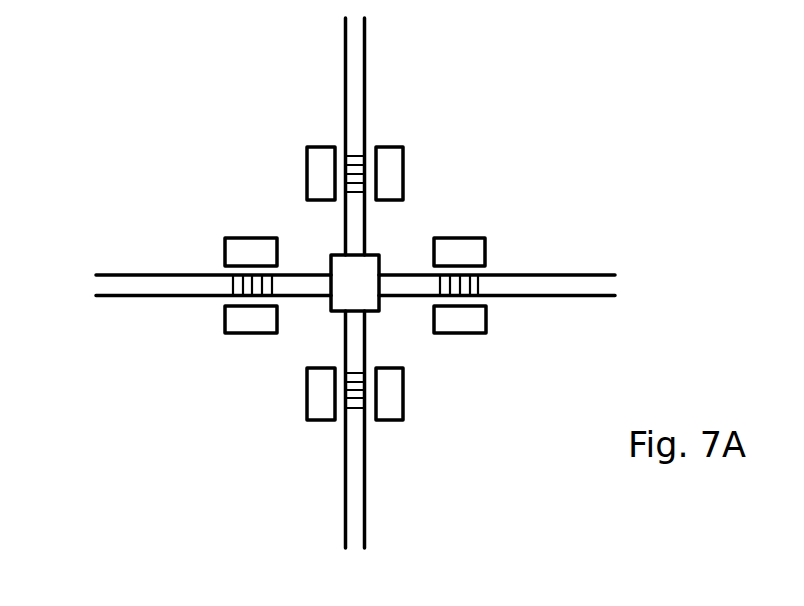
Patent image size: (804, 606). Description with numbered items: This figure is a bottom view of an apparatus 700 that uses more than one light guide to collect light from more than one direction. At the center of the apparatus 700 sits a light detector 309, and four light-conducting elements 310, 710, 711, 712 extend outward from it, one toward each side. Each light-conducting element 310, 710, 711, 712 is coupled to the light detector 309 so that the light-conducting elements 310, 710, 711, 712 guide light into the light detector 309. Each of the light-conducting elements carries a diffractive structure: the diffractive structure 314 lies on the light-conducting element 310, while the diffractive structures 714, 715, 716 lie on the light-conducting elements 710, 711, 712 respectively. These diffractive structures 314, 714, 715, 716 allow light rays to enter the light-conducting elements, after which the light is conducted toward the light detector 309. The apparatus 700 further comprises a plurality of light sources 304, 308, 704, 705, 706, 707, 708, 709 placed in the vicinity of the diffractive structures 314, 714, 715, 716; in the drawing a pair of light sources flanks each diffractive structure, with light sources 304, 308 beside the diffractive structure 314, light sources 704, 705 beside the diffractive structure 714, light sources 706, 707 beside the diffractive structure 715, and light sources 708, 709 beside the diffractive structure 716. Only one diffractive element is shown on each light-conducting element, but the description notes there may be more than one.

The apparatus 700 is at (621, 142).
The light source 304 is at (240, 237).
The light source 308 is at (242, 335).
The light detector 309 is at (380, 300).
The light-conducting element 310 is at (115, 296).
The diffractive structure 314 is at (234, 287).
The light source 704 is at (305, 148).
The light source 705 is at (404, 148).
The light source 706 is at (470, 237).
The light source 707 is at (463, 333).
The light source 708 is at (403, 385).
The light source 709 is at (317, 420).
The light-conducting element 710 is at (344, 102).
The light-conducting element 711 is at (580, 297).
The light-conducting element 712 is at (344, 468).
The diffractive structure 714 is at (365, 150).
The diffractive structure 715 is at (478, 288).
The diffractive structure 716 is at (355, 412).